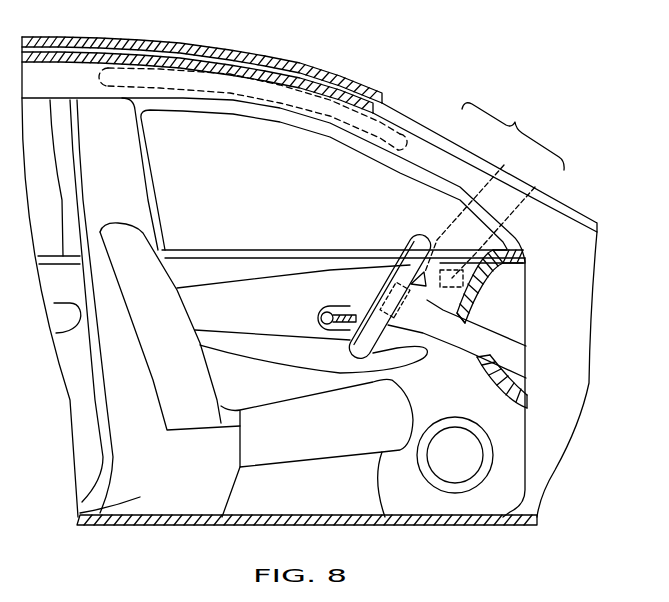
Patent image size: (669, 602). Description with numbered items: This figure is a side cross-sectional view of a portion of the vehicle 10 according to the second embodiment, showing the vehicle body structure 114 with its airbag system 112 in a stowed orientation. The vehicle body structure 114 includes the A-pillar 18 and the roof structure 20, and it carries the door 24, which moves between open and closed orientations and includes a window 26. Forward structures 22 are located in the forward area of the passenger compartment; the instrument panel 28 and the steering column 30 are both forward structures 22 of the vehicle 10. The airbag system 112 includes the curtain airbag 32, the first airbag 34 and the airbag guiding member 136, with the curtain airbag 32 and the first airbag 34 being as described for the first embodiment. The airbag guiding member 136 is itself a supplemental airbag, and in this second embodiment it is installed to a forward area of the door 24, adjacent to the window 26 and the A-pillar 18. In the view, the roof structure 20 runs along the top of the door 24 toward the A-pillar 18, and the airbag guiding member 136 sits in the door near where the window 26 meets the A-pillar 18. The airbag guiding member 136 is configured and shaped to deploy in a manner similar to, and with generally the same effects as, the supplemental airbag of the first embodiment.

The vehicle 10 is at (450, 88).
The A-pillar 18 is at (398, 128).
The roof structure 20 is at (172, 57).
The forward structure 22 is at (534, 331).
The door 24 is at (278, 300).
The window 26 is at (247, 168).
The instrument panel 28 is at (514, 240).
The steering column 30 is at (416, 246).
The curtain airbag 32 is at (433, 131).
The first airbag 34 is at (504, 165).
The airbag system 112 is at (513, 136).
The vehicle body structure 114 is at (308, 55).
The airbag guiding member 136 is at (535, 187).